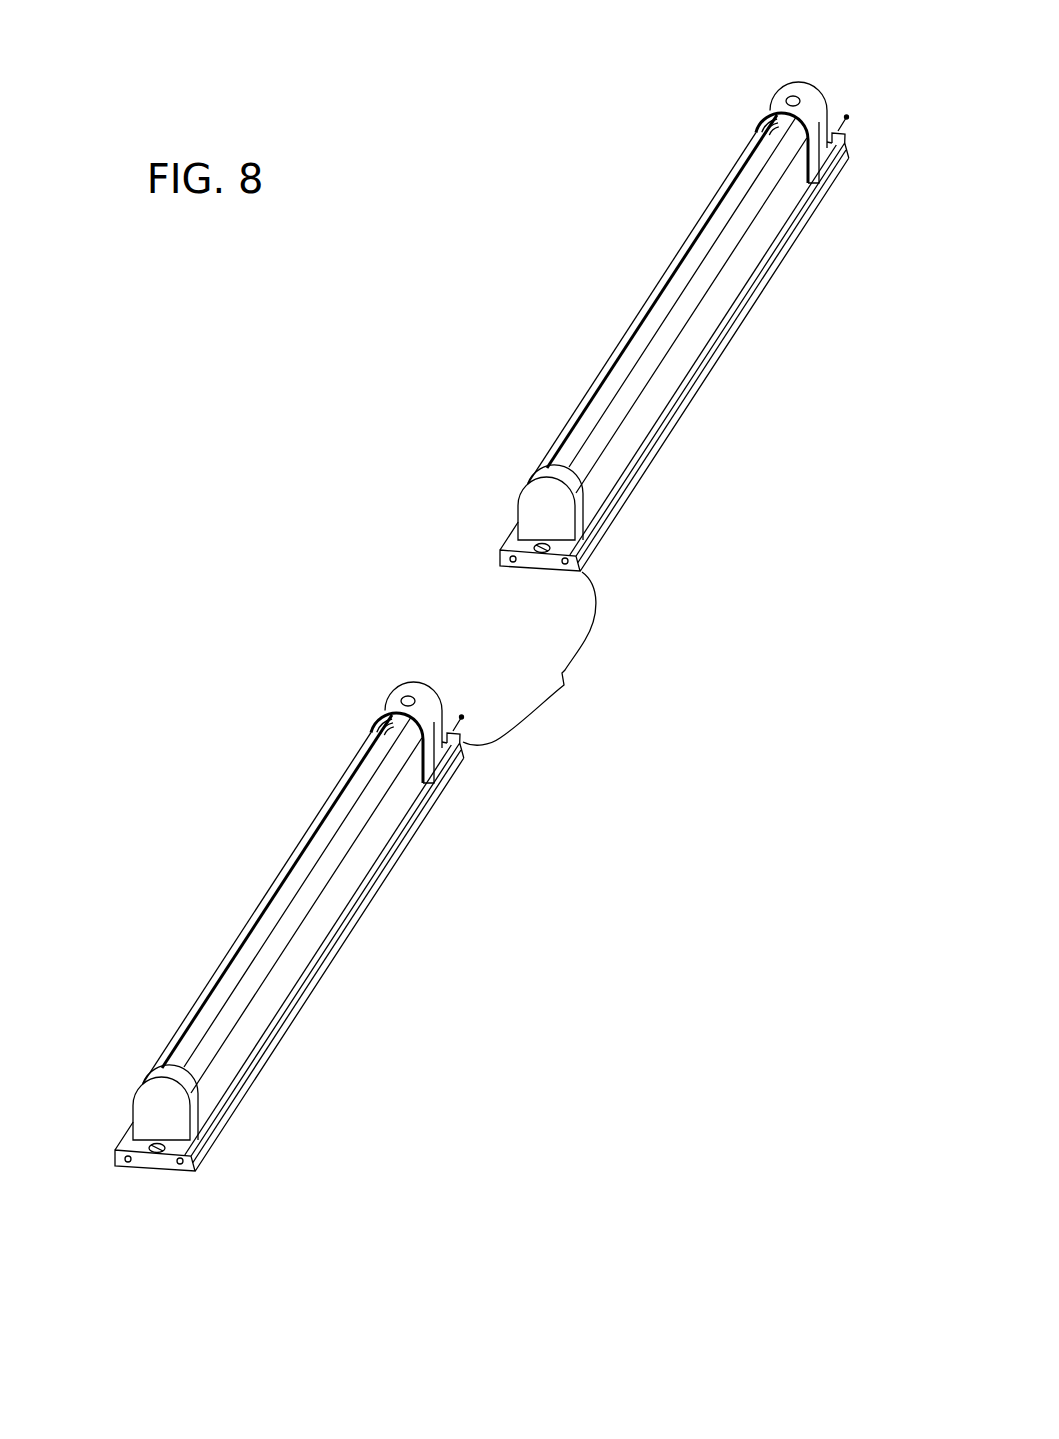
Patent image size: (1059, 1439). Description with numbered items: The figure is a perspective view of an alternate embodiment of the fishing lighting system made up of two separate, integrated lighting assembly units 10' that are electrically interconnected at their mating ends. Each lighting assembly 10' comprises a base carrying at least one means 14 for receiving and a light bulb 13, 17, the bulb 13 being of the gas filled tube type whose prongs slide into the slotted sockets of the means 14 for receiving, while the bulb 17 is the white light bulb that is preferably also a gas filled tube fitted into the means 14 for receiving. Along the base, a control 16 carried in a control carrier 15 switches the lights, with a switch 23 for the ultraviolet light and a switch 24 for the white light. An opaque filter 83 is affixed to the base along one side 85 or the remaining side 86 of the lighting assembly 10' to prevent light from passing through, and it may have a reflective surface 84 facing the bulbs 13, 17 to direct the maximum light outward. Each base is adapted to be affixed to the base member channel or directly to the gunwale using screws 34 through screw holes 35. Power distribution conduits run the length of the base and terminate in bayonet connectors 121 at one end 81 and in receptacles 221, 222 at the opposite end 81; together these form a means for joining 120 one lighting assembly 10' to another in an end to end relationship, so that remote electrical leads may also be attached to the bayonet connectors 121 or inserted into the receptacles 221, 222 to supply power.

The integrated lighting assembly unit 10' is at (478, 633).
The bulb 13 is at (640, 335).
The means for receiving 14 is at (540, 465).
The control carrier 15 is at (811, 97).
The control 16 is at (640, 133).
The bulb 17 is at (263, 935).
The switch 23 is at (787, 100).
The switch 24 is at (404, 696).
The screw 34 is at (538, 544).
The screw hole 35 is at (156, 1152).
The end 81 is at (847, 130).
The opaque filter 83 is at (667, 383).
The reflective surface 84 is at (683, 282).
The side 85 is at (802, 304).
The side 86 is at (546, 223).
The means for joining 120 is at (566, 670).
The bayonet connector 121 is at (847, 120).
The receptacle 221 is at (564, 564).
The receptacle 222 is at (511, 561).